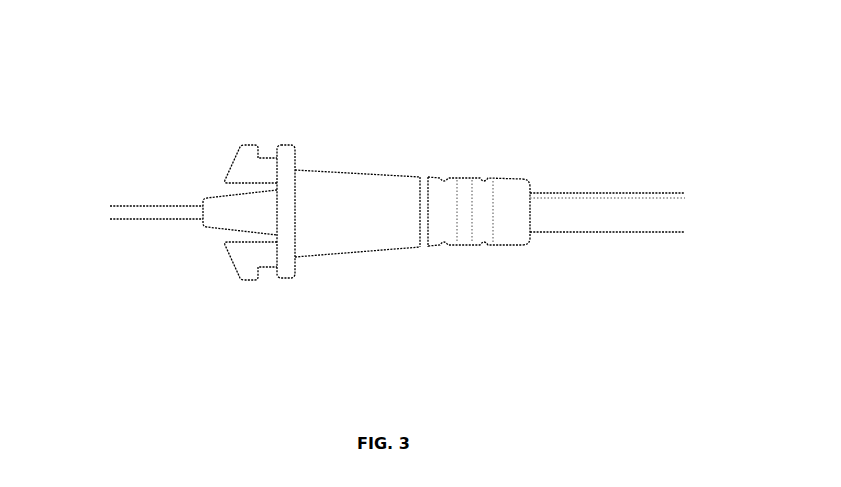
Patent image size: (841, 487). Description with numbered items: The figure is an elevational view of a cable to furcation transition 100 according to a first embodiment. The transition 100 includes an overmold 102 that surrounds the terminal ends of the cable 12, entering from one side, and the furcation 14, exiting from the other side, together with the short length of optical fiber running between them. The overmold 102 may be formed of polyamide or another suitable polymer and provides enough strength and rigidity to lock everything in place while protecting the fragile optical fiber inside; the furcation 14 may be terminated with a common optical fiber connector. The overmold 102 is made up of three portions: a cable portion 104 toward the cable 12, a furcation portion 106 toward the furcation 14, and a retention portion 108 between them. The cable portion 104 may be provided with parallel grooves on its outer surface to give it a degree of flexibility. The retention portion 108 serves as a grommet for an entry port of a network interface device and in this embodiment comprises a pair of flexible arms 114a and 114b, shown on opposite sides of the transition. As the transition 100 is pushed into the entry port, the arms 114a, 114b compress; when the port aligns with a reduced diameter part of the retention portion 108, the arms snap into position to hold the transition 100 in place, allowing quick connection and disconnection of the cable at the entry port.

The cable 12 is at (630, 190).
The furcation 14 is at (177, 206).
The transition 100 is at (515, 104).
The overmold 102 is at (362, 168).
The cable portion 104 is at (514, 242).
The furcation portion 106 is at (215, 228).
The retention portion 108 is at (267, 158).
The flexible arm 114a is at (240, 162).
The flexible arm 114b is at (248, 278).